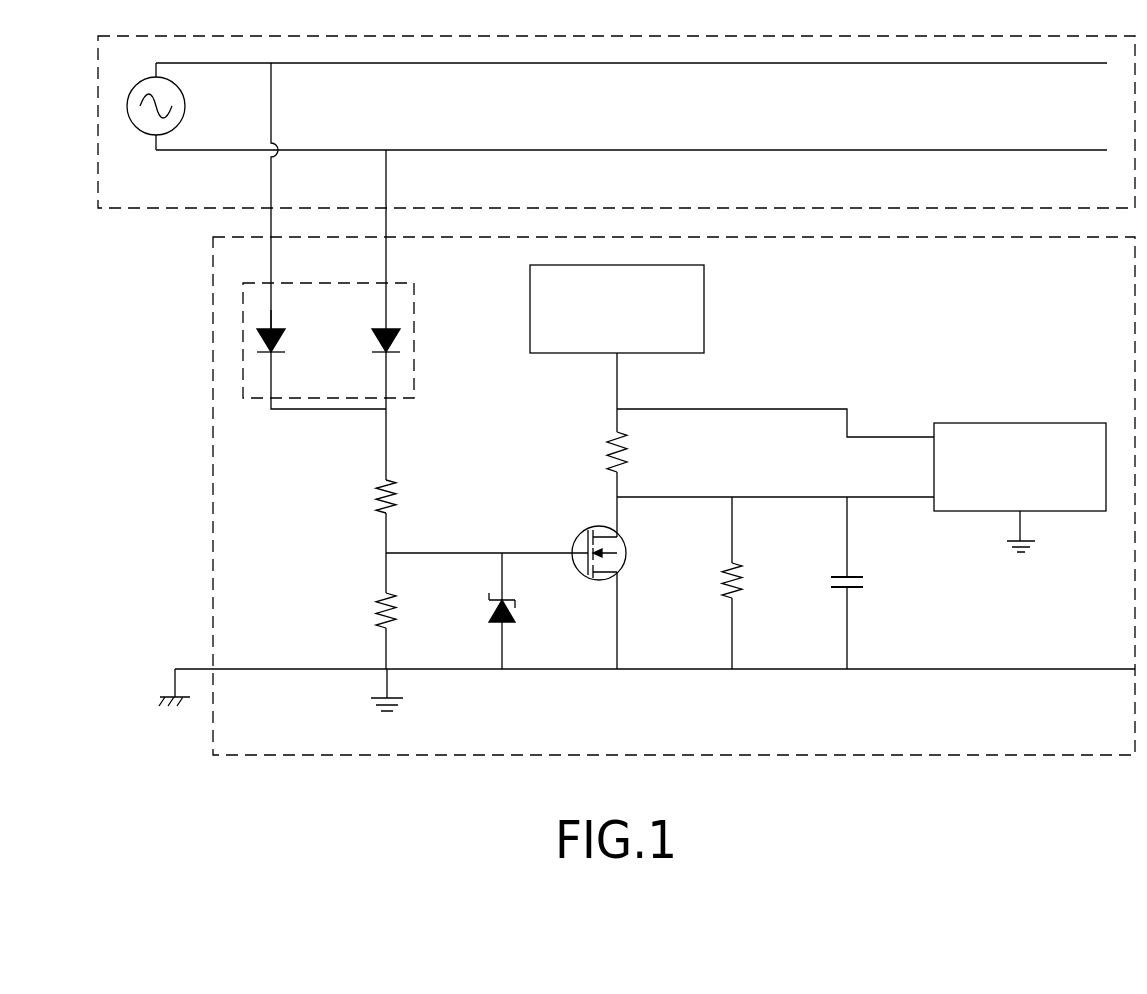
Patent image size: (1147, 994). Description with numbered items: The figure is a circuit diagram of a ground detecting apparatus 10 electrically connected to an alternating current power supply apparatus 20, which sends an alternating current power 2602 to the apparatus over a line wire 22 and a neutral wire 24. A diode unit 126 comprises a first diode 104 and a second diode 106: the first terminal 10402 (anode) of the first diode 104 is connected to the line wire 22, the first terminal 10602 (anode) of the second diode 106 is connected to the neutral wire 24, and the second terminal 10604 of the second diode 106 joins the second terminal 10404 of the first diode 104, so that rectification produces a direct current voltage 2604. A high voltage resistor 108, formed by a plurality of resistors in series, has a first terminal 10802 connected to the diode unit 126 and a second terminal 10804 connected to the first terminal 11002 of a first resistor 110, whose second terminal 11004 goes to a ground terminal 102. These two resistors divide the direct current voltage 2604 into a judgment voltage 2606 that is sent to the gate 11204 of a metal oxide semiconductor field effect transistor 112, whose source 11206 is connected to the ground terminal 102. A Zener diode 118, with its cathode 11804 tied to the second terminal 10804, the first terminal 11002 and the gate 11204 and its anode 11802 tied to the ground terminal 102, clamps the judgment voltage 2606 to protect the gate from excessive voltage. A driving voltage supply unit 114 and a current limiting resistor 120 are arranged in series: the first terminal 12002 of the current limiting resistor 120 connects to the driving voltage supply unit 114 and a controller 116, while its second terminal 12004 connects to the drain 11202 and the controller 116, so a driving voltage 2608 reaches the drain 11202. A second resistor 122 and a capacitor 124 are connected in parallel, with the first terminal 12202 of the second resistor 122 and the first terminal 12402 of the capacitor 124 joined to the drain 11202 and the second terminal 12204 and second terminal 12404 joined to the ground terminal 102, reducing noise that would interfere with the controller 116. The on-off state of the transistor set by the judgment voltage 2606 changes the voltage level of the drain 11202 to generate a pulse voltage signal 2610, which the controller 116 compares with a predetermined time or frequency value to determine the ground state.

The ground detecting apparatus 10 is at (850, 757).
The alternating current power supply apparatus 20 is at (615, 39).
The line wire 22 is at (157, 63).
The neutral wire 24 is at (157, 150).
The ground terminal 102 is at (383, 707).
The first diode 104 is at (285, 333).
The first terminal 10402 is at (271, 317).
The second terminal 10404 is at (271, 355).
The second diode 106 is at (400, 333).
The first terminal 10602 is at (386, 317).
The second terminal 10604 is at (386, 355).
The high voltage resistor 108 is at (376, 492).
The first terminal 10802 is at (384, 472).
The second terminal 10804 is at (384, 520).
The first resistor 110 is at (376, 605).
The first terminal 11002 is at (384, 587).
The second terminal 11004 is at (384, 634).
The metal oxide semiconductor field effect transistor 112 is at (627, 553).
The drain 11202 is at (617, 527).
The gate 11204 is at (568, 553).
The source 11206 is at (617, 582).
The driving voltage supply unit 114 is at (704, 305).
The controller 116 is at (1020, 430).
The Zener diode 118 is at (488, 600).
The anode 11802 is at (500, 628).
The cathode 11804 is at (500, 583).
The current limiting resistor 120 is at (607, 455).
The first terminal 12002 is at (612, 433).
The second terminal 12004 is at (617, 478).
The second resistor 122 is at (740, 585).
The first terminal 12202 is at (732, 560).
The second terminal 12204 is at (732, 600).
The capacitor 124 is at (862, 583).
The first terminal 12402 is at (847, 558).
The second terminal 12404 is at (847, 606).
The diode unit 126 is at (402, 283).
The alternating current power 2602 is at (272, 177).
The direct current voltage 2604 is at (386, 428).
The judgment voltage 2606 is at (424, 552).
The driving voltage 2608 is at (617, 364).
The pulse voltage signal 2610 is at (675, 497).